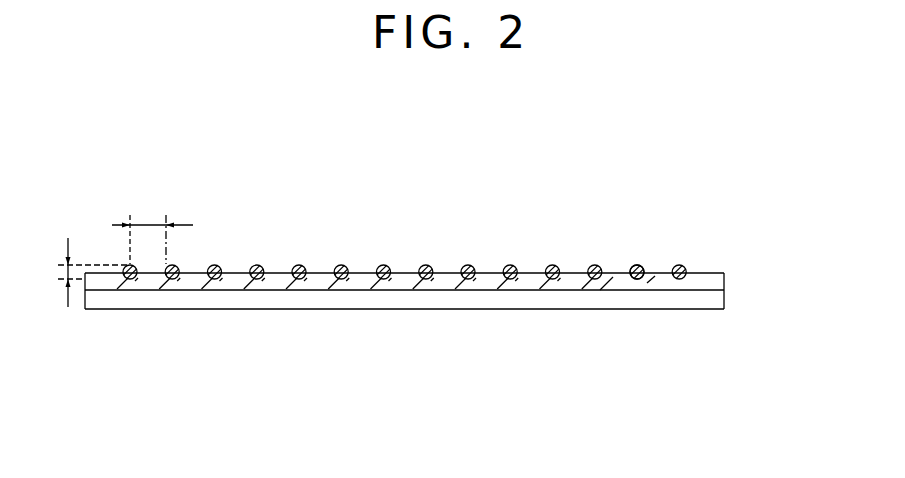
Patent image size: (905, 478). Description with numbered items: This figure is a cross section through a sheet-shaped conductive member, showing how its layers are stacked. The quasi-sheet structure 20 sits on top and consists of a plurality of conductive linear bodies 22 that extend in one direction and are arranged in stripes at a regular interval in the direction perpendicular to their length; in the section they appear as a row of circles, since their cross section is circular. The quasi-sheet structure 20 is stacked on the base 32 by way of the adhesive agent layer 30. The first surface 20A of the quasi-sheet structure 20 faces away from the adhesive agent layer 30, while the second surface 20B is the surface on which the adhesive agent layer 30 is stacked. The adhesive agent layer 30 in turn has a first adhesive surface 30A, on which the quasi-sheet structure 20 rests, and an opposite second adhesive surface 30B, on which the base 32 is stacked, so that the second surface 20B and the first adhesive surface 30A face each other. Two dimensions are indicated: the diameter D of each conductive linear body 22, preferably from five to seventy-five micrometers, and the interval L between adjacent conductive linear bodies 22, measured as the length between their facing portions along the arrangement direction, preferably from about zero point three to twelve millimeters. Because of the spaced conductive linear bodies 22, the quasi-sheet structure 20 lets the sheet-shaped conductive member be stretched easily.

The quasi-sheet structure 20 is at (425, 273).
The first surface 20A is at (638, 258).
The second surface 20B is at (641, 292).
The conductive linear bodies 22 is at (429, 265).
The adhesive agent layer 30 is at (446, 301).
The first adhesive surface 30A is at (688, 290).
The second adhesive surface 30B is at (703, 296).
The base 32 is at (425, 327).
The diameter D is at (81, 272).
The interval L is at (150, 222).